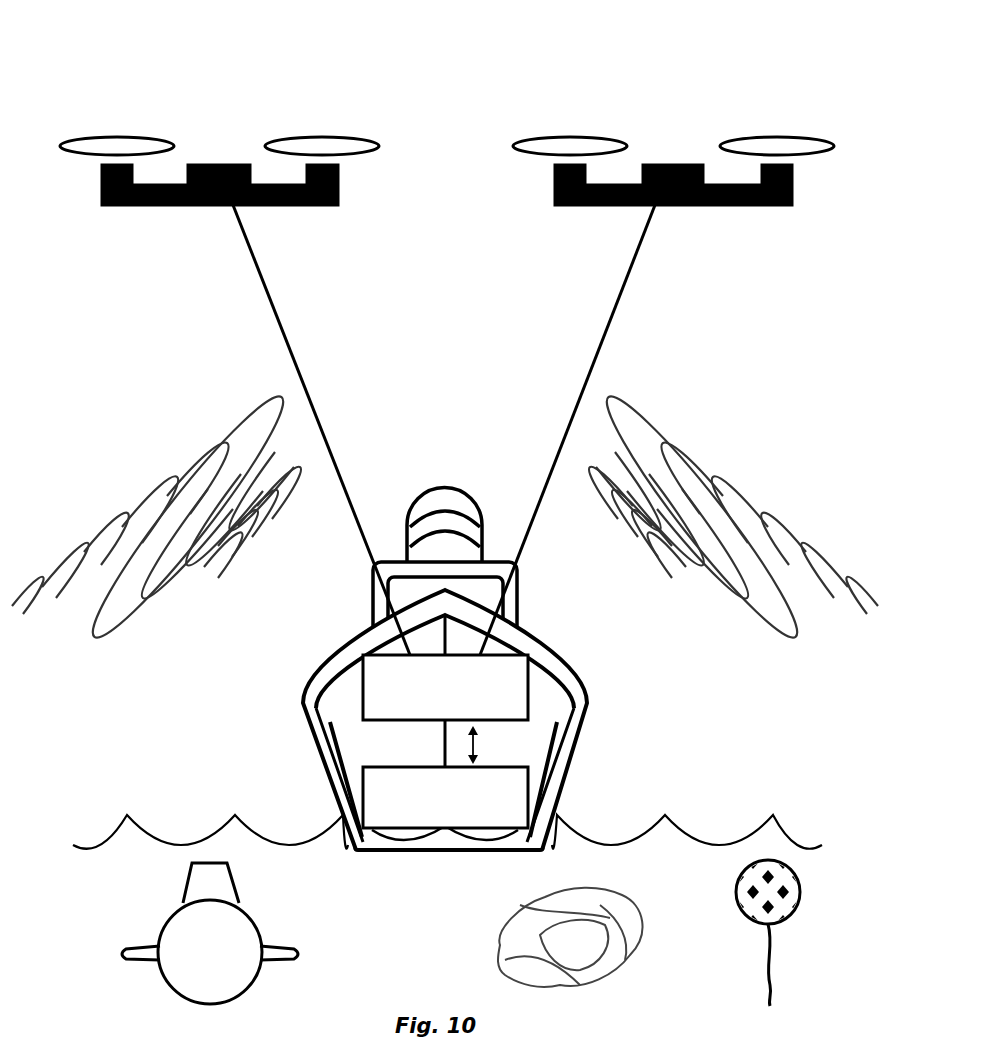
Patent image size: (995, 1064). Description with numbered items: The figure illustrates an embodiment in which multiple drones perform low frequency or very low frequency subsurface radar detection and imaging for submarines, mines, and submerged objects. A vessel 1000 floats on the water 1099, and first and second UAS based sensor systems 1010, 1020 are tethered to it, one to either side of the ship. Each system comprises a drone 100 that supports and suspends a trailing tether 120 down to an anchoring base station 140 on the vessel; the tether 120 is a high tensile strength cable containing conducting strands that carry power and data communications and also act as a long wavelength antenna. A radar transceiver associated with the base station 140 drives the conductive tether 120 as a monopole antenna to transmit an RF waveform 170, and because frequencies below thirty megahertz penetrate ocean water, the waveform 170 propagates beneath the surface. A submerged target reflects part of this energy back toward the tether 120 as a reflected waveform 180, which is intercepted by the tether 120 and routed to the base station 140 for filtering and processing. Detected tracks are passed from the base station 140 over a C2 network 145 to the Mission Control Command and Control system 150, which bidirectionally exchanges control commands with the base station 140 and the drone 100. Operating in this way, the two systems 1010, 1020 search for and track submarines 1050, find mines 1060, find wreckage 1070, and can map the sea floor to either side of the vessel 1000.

The drone 100 is at (447, 153).
The tether 120 is at (444, 430).
The base station 140 is at (445, 687).
The C2 network 145 is at (434, 743).
The Mission Control Command and Control system 150 is at (445, 797).
The transmitted RF waveform 170 is at (445, 528).
The reflected waveform 180 is at (445, 517).
The vessel 1000 is at (587, 757).
The first UAS based sensor system 1010 is at (148, 74).
The second UAS based sensor system 1020 is at (752, 74).
The submarine 1050 is at (210, 933).
The mine 1060 is at (748, 915).
The wreckage 1070 is at (500, 950).
The water 1099 is at (723, 818).